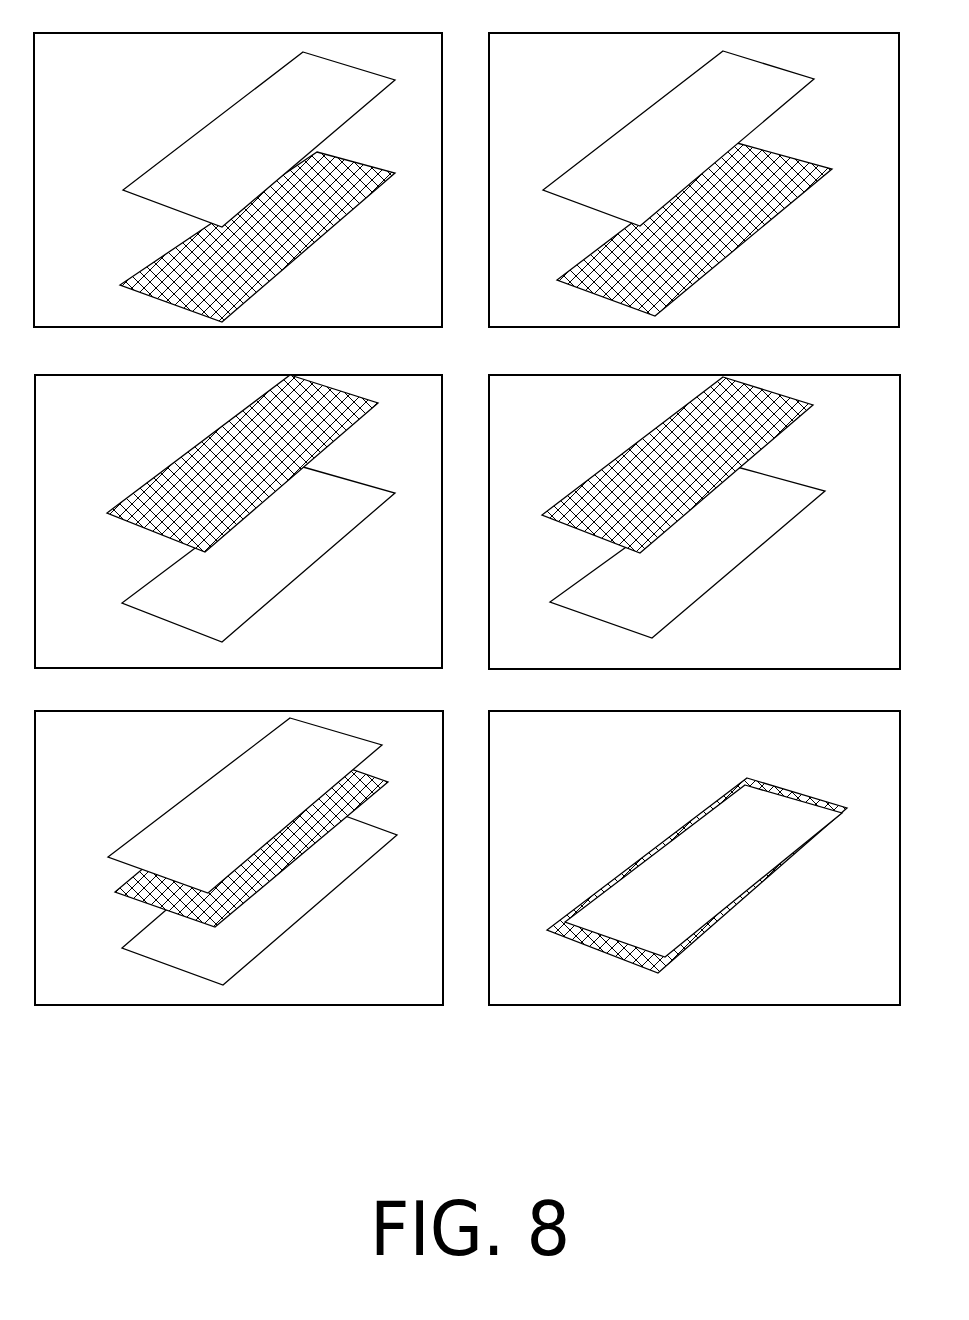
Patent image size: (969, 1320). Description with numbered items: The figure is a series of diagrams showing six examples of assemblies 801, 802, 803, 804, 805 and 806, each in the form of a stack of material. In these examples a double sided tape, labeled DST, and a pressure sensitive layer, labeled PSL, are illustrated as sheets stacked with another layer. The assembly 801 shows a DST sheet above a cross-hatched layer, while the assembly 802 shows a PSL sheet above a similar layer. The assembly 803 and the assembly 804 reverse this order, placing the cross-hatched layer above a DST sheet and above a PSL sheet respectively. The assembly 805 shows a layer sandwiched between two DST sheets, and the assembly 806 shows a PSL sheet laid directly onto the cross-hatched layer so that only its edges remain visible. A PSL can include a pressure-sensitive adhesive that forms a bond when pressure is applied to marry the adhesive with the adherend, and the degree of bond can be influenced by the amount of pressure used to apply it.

The assembly 801 is at (100, 148).
The assembly 802 is at (556, 71).
The assembly 803 is at (98, 490).
The assembly 804 is at (554, 416).
The assembly 805 is at (99, 826).
The assembly 806 is at (556, 753).